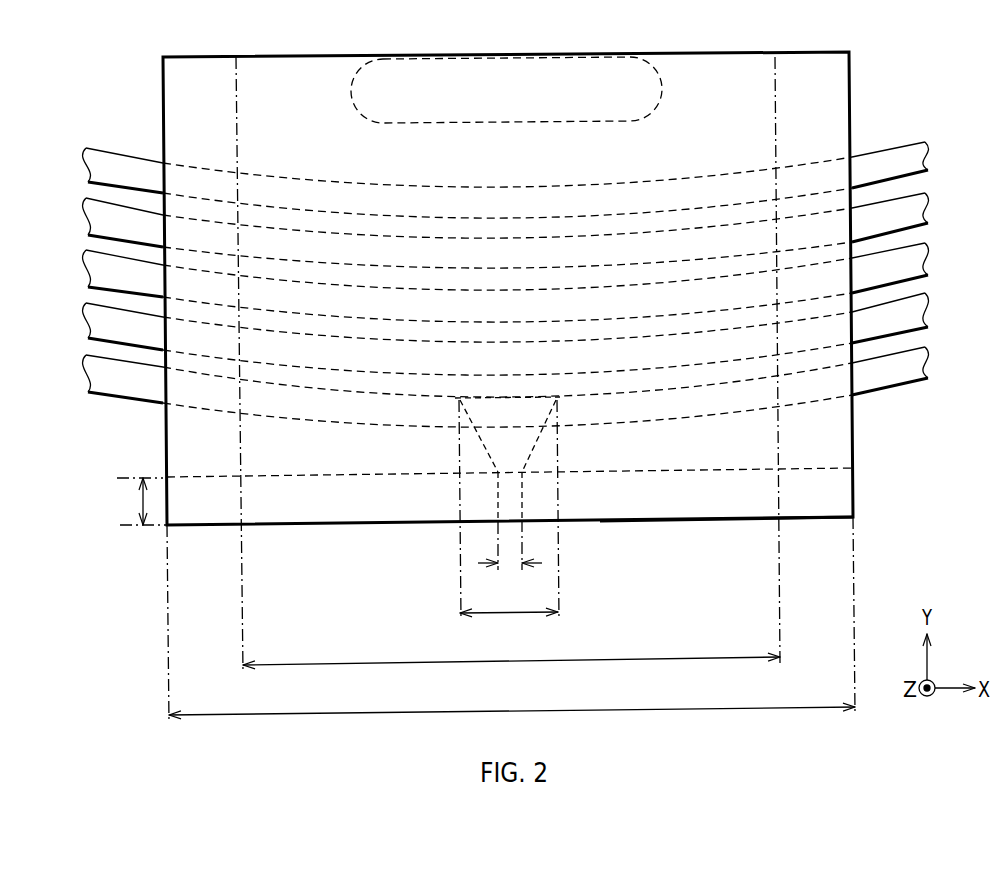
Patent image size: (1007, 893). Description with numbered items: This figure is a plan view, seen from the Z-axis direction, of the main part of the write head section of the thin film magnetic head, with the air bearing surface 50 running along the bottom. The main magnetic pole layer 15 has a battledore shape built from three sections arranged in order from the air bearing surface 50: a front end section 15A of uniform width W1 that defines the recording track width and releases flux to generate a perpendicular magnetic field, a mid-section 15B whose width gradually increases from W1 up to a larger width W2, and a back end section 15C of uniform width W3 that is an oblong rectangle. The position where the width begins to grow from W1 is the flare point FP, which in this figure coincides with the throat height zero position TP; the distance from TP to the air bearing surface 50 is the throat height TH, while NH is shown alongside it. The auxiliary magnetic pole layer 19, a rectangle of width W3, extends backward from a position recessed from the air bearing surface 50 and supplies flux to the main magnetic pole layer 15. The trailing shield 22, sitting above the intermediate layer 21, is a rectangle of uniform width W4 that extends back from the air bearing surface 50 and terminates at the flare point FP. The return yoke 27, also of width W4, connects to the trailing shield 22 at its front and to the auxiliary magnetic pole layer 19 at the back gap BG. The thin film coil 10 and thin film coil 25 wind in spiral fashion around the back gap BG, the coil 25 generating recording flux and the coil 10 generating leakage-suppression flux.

The thin film coil 10 is at (506, 260).
The thin film coil 25 is at (133, 168).
The back gap BG is at (496, 82).
The auxiliary magnetic pole layer 19 is at (762, 342).
The main magnetic pole layer 15 is at (565, 442).
The front end section 15A is at (520, 493).
The mid-section 15B is at (520, 451).
The back end section 15C is at (762, 387).
The intermediate layer 21 is at (560, 483).
The trailing shield 22 is at (620, 512).
The return yoke 27 is at (693, 512).
The air bearing surface 50 is at (352, 527).
The throat height zero position TP is at (459, 458).
The flare point FP is at (110, 478).
The throat height TH is at (123, 501).
The neck height NH is at (123, 501).
The width of front end section W1 is at (512, 565).
The width of mid-section W2 is at (512, 614).
The width of back end section W3 is at (512, 661).
The width of trailing shield W4 is at (512, 711).